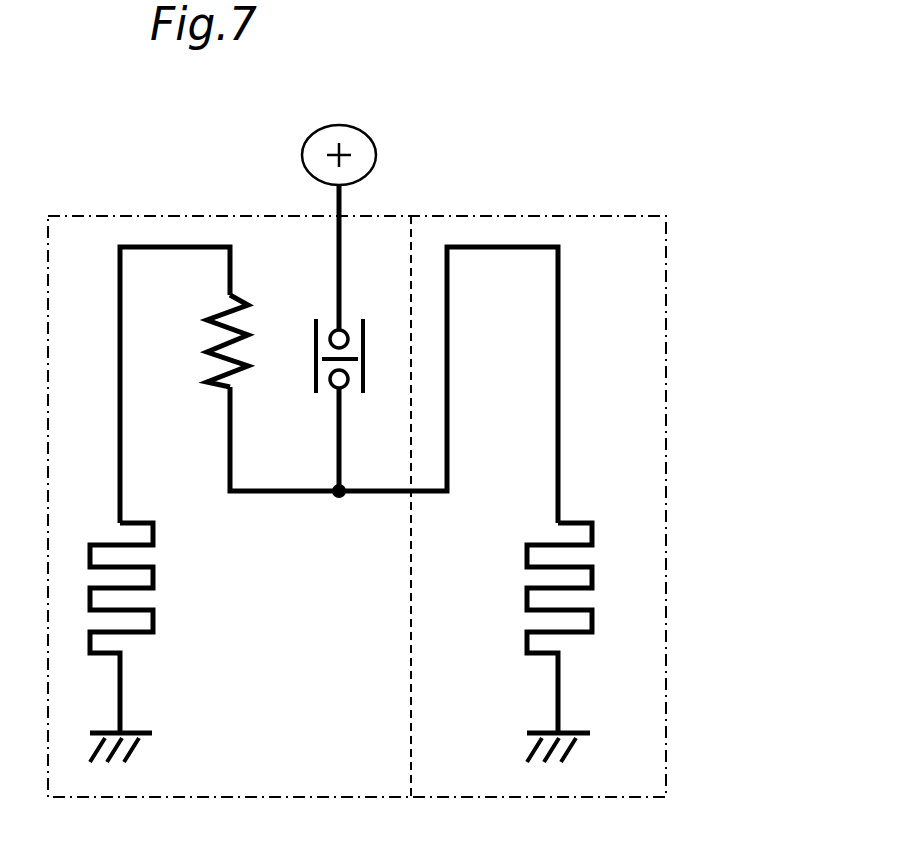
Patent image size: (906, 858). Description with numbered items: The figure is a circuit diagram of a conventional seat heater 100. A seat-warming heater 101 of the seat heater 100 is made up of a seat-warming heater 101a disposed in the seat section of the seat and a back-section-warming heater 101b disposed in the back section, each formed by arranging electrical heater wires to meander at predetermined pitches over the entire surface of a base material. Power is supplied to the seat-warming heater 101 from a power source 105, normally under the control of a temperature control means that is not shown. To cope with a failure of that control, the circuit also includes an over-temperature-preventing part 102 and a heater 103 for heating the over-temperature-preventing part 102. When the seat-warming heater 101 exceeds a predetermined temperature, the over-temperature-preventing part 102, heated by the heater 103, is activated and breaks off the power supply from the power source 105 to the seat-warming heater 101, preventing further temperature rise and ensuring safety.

The seat heater 100 is at (714, 261).
The seat-warming heater 101 is at (341, 642).
The seat-warming heater 101a is at (153, 578).
The back-section-warming heater 101b is at (527, 597).
The over-temperature-preventing part 102 is at (366, 318).
The heater 103 is at (203, 307).
The power source 105 is at (365, 143).